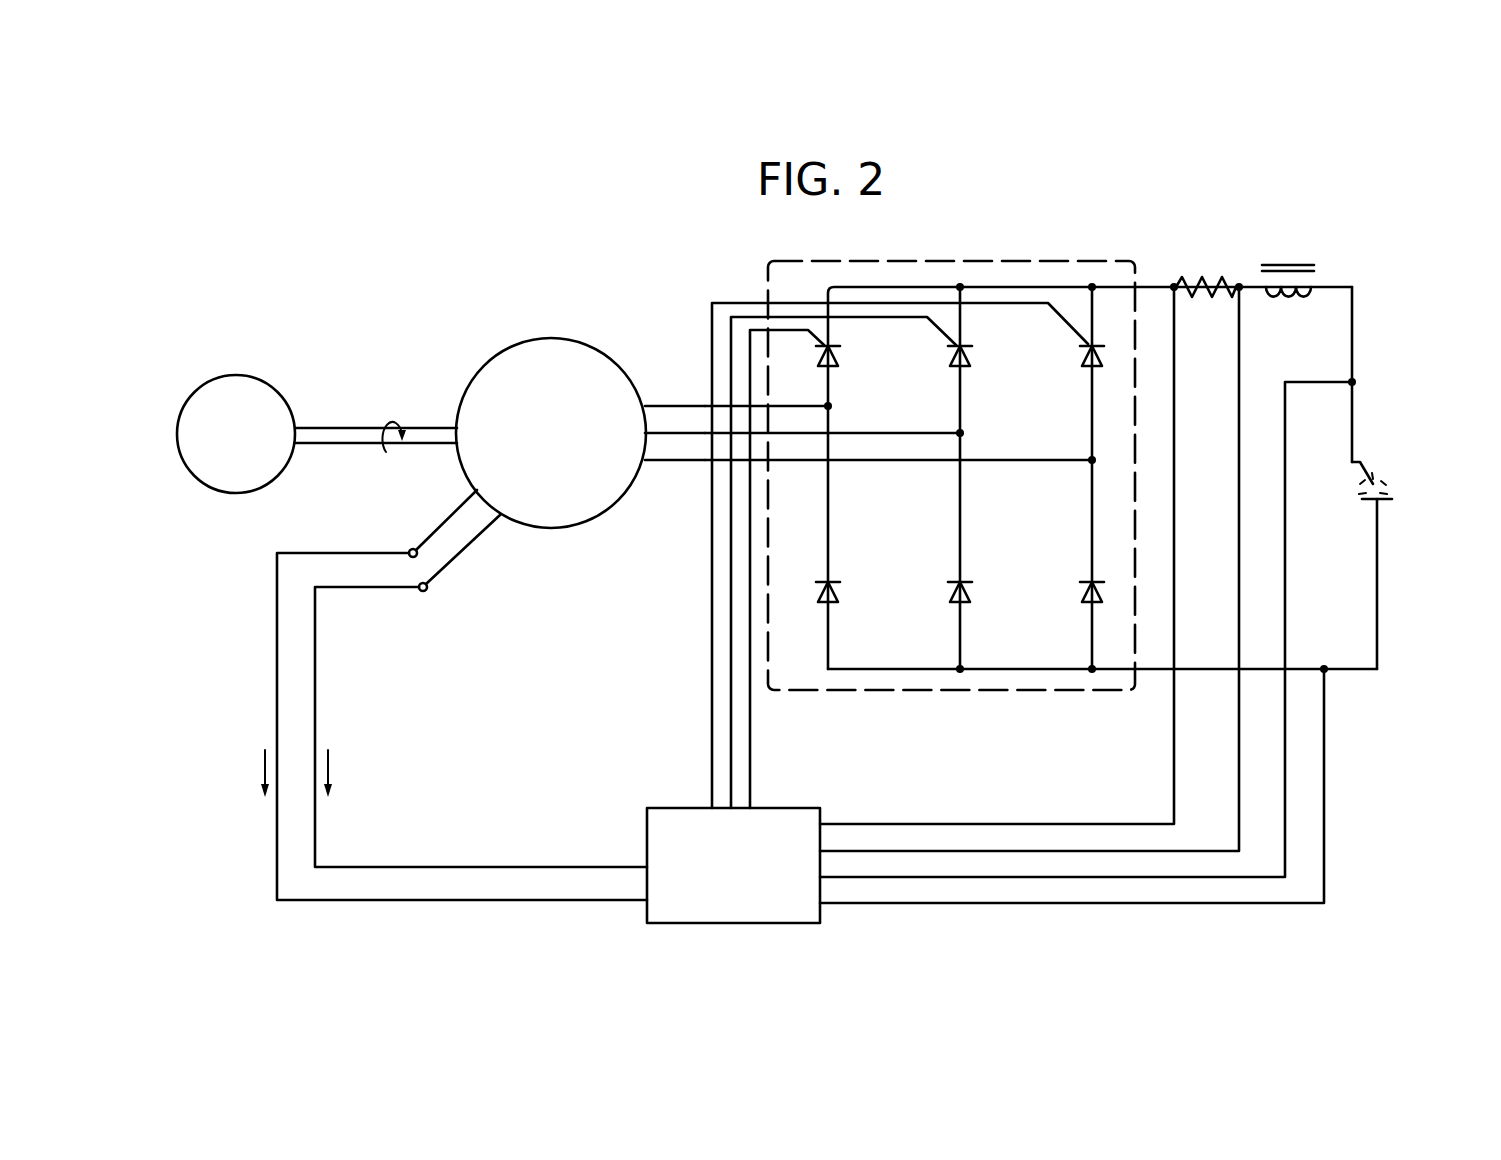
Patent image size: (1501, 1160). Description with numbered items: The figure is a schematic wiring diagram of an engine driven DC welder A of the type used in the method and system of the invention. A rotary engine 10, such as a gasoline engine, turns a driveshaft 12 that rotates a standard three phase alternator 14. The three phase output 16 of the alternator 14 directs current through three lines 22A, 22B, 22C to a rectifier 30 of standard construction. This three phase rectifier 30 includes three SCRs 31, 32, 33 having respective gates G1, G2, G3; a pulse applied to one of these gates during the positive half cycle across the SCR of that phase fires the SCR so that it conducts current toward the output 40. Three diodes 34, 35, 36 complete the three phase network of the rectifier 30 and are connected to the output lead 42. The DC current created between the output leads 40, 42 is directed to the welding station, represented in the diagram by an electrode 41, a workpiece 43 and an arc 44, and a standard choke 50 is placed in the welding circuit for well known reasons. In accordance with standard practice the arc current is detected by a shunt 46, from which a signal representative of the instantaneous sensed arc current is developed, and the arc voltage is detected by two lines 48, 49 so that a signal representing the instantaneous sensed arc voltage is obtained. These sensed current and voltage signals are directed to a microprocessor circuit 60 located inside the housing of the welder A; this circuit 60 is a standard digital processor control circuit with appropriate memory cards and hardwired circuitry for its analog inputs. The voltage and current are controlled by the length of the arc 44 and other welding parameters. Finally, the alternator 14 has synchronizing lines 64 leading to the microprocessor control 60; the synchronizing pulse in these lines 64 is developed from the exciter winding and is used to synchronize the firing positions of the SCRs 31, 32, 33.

The engine driven DC welder A is at (664, 246).
The rotary engine 10 is at (253, 376).
The driveshaft 12 is at (343, 426).
The three phase alternator 14 is at (513, 343).
The three phase output 16 is at (649, 385).
The line 22A is at (678, 403).
The line 22B is at (657, 436).
The line 22C is at (687, 463).
The rectifier 30 is at (989, 251).
The SCR 31 is at (838, 362).
The SCR 32 is at (963, 366).
The SCR 33 is at (1083, 366).
The gate G1 is at (814, 338).
The gate G2 is at (940, 331).
The gate G3 is at (1067, 325).
The diode 34 is at (840, 595).
The diode 35 is at (972, 595).
The diode 36 is at (1085, 595).
The output 40 is at (1148, 283).
The electrode 41 is at (1369, 470).
The output lead 42 is at (1158, 668).
The workpiece 43 is at (1386, 502).
The arc 44 is at (1393, 485).
The shunt 46 is at (1197, 280).
The line 48 is at (1288, 770).
The line 49 is at (1326, 835).
The choke 50 is at (1290, 262).
The microprocessor circuit 60 is at (787, 806).
The synchronizing lines 64 is at (252, 651).